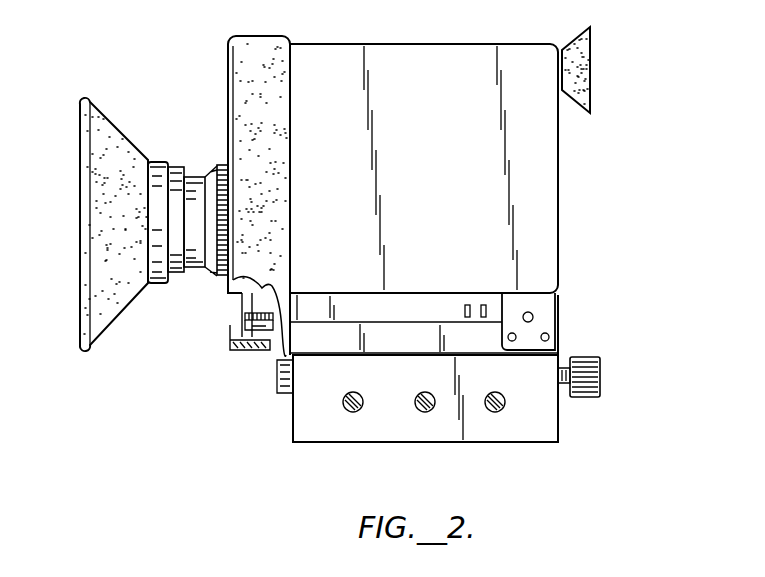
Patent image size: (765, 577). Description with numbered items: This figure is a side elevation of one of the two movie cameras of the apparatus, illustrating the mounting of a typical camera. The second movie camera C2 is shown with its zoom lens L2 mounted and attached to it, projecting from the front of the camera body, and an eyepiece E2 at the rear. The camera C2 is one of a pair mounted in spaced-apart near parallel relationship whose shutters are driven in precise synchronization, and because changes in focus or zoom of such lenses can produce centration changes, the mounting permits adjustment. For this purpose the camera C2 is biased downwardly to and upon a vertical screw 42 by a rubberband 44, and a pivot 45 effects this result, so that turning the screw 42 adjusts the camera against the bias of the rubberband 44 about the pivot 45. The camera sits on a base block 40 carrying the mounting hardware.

The second movie camera C2 is at (453, 43).
The rubberband 44 is at (257, 33).
The zoom lens L2 is at (182, 186).
The vertical screw 42 is at (245, 317).
The pivot 45 is at (535, 317).
The base block 40 is at (418, 411).
The eyepiece E2 is at (577, 30).